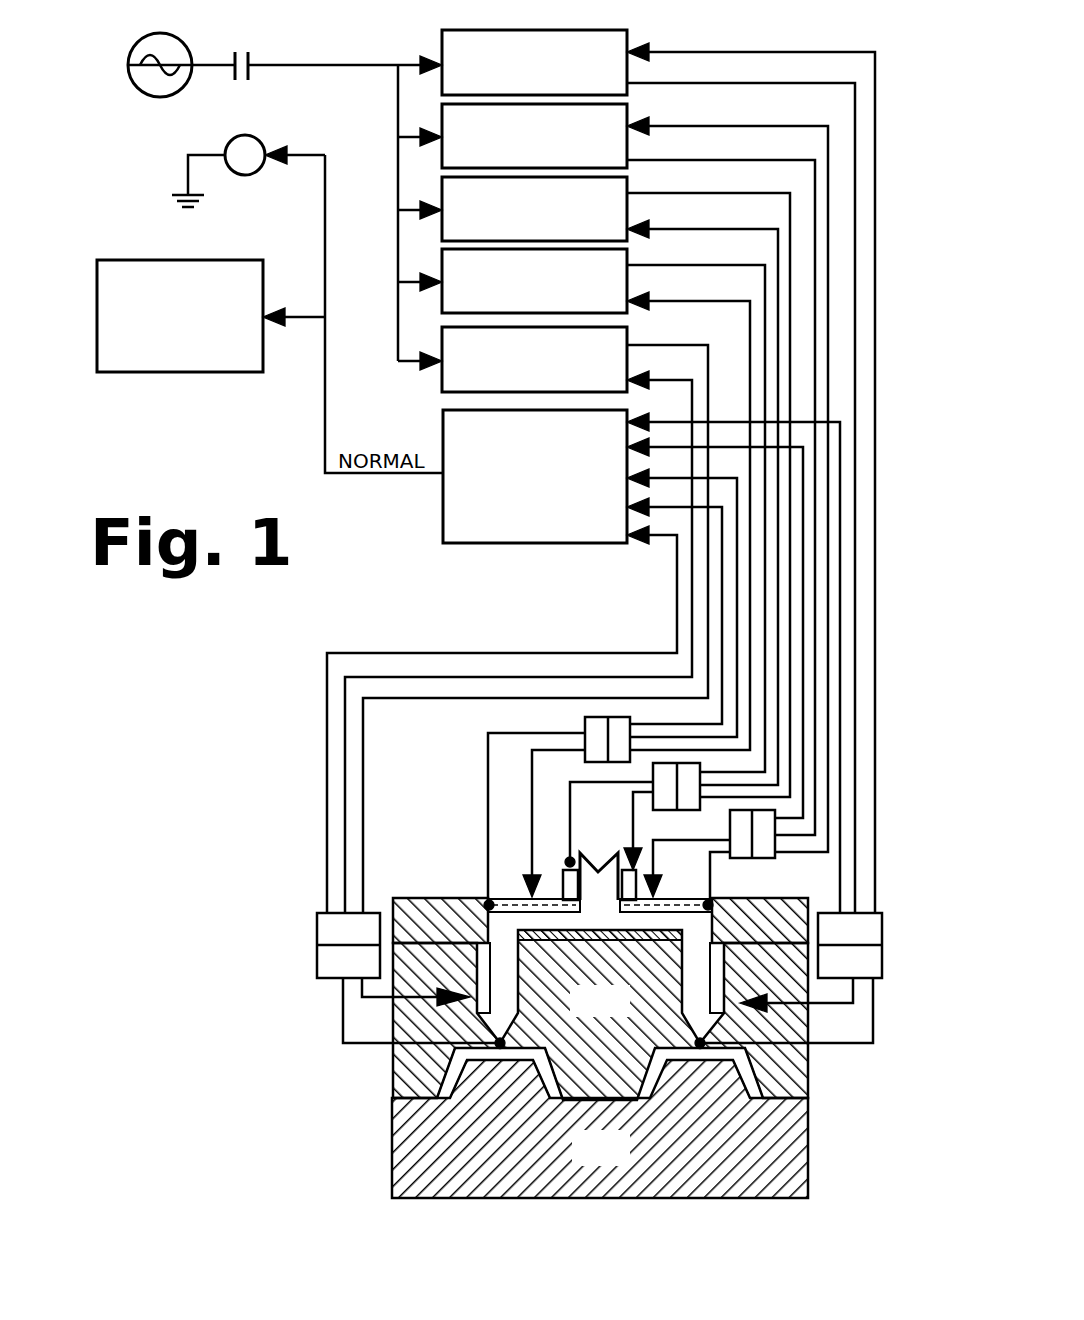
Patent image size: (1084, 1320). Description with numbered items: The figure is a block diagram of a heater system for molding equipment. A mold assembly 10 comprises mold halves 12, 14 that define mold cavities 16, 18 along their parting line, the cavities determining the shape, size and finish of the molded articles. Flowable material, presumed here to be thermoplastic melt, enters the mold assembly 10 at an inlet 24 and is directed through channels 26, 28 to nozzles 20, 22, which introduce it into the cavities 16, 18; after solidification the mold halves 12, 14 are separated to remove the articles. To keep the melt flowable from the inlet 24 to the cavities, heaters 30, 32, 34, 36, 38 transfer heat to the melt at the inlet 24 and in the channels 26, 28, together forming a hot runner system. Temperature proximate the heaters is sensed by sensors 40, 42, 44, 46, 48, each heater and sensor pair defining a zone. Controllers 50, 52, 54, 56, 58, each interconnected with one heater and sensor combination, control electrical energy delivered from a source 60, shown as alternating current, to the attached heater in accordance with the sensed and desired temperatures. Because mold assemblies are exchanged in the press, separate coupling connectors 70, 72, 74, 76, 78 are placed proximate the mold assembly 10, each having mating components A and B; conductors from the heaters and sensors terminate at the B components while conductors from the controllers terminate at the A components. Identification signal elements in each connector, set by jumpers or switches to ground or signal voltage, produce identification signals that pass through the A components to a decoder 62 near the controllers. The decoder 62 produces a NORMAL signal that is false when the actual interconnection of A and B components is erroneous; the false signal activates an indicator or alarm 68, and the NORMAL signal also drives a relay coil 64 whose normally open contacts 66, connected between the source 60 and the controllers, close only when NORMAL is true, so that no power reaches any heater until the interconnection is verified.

The mold assembly 10 is at (444, 822).
The mold half 12 is at (587, 1013).
The mold half 14 is at (587, 1160).
The mold cavity 16 is at (395, 1068).
The mold cavity 18 is at (805, 1080).
The nozzle 20 is at (495, 1040).
The nozzle 22 is at (705, 1040).
The inlet 24 is at (618, 868).
The channel 26 is at (712, 903).
The channel 28 is at (478, 960).
The heater 30 is at (630, 873).
The heater 32 is at (712, 960).
The heater 34 is at (760, 900).
The heater 36 is at (440, 900).
The heater 38 is at (512, 898).
The temperature sensor 40 is at (568, 858).
The temperature sensor 42 is at (700, 912).
The temperature sensor 44 is at (793, 1050).
The temperature sensor 46 is at (445, 1053).
The temperature sensor 48 is at (482, 900).
The controller 50 is at (458, 47).
The controller 52 is at (456, 128).
The controller 54 is at (460, 195).
The controller 56 is at (460, 266).
The controller 58 is at (458, 343).
The source 60 is at (150, 92).
The decoder 62 is at (452, 450).
The relay coil 64 is at (250, 170).
The normally open contacts 66 is at (240, 82).
The indicator or alarm 68 is at (168, 346).
The connector 70 is at (868, 945).
The connector 72 is at (330, 945).
The connector 74 is at (605, 718).
The connector 76 is at (674, 763).
The connector 78 is at (752, 808).